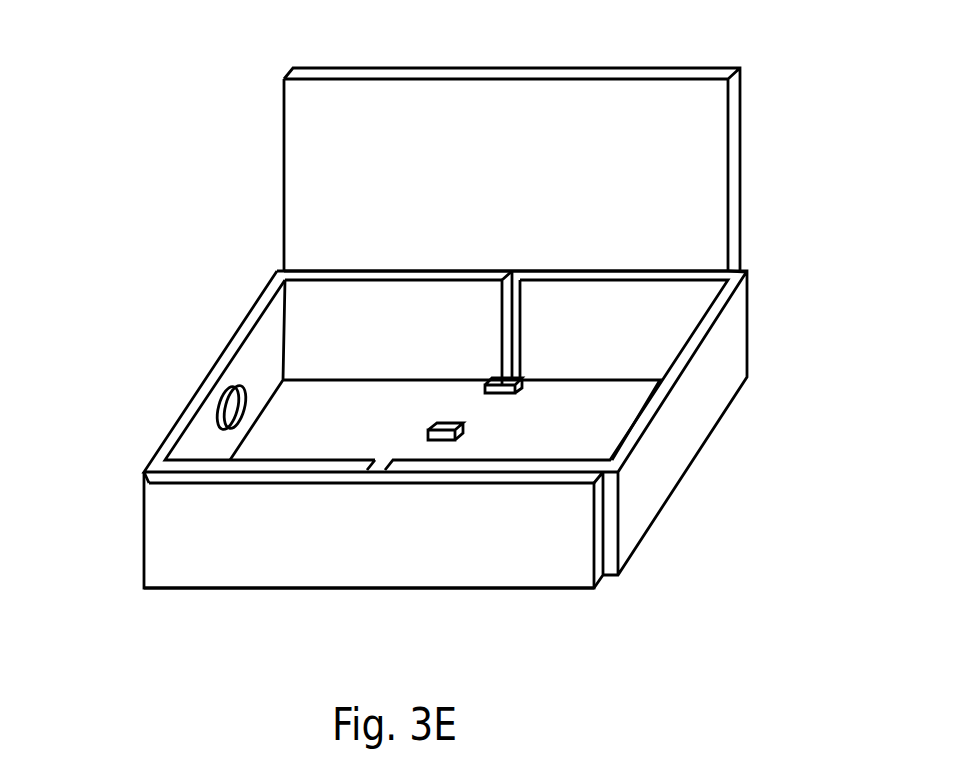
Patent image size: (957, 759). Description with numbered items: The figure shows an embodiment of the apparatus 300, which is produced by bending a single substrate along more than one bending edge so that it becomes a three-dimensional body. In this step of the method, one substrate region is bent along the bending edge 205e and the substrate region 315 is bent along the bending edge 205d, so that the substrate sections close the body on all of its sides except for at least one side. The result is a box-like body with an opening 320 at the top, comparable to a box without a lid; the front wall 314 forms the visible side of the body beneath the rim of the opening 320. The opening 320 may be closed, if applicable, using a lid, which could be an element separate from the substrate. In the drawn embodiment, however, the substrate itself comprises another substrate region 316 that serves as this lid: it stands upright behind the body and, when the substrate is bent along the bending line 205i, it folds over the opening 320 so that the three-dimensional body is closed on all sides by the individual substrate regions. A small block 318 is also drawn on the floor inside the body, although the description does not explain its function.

The apparatus 300 is at (134, 352).
The substrate region 316 is at (712, 140).
The bending line 205i is at (695, 270).
The substrate region 315 is at (765, 295).
The front wall 314 is at (170, 545).
The bending edge 205e is at (218, 588).
The opening 320 is at (242, 297).
The bending edge 205d is at (378, 380).
The sensor block 318 is at (428, 433).